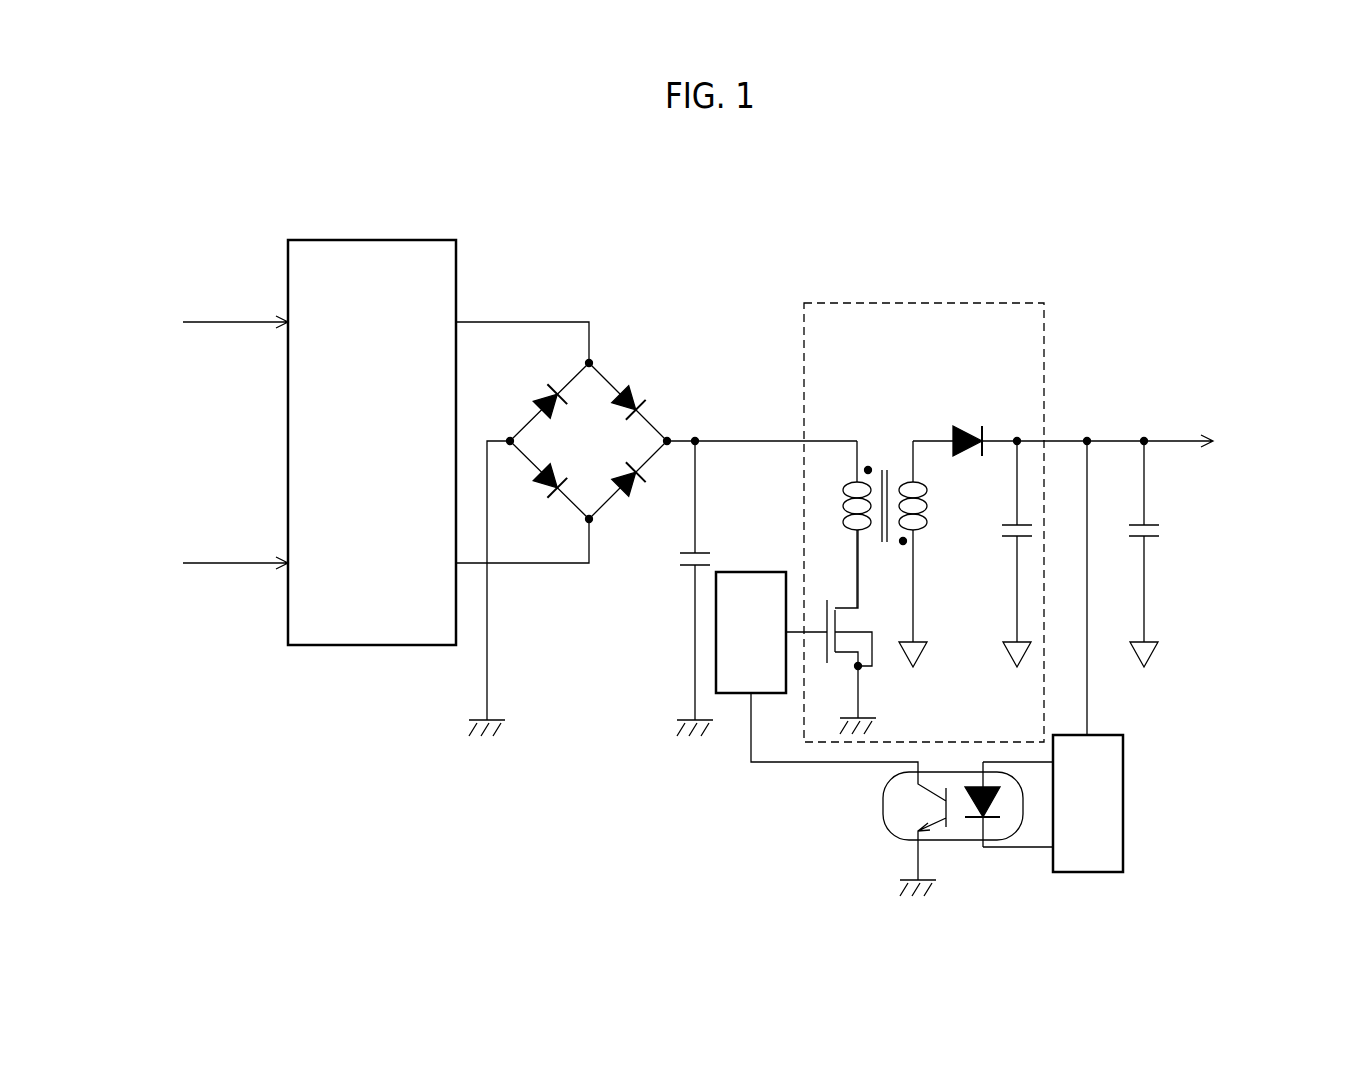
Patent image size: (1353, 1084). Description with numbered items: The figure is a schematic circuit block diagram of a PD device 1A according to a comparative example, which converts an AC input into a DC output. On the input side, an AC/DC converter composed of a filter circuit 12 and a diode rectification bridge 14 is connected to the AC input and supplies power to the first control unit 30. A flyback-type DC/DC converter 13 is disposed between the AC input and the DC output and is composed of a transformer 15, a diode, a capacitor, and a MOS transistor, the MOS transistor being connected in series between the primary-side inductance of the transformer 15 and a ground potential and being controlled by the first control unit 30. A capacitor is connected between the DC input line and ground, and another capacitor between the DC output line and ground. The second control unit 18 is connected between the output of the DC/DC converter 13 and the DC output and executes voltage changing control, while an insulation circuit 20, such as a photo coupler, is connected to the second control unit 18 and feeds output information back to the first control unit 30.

The PD device 1A is at (829, 200).
The filter circuit 12 is at (372, 240).
The DC/DC converter 13 is at (925, 303).
The diode rectification bridge 14 is at (632, 344).
The transformer 15 is at (897, 402).
The control unit 2 18 is at (1123, 805).
The insulation circuit 20 is at (883, 809).
The control unit 1 30 is at (752, 572).